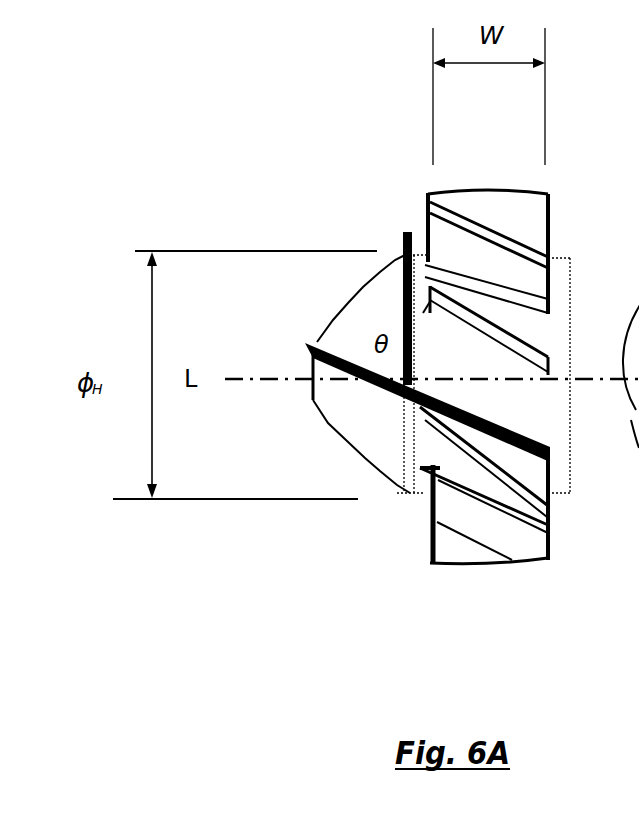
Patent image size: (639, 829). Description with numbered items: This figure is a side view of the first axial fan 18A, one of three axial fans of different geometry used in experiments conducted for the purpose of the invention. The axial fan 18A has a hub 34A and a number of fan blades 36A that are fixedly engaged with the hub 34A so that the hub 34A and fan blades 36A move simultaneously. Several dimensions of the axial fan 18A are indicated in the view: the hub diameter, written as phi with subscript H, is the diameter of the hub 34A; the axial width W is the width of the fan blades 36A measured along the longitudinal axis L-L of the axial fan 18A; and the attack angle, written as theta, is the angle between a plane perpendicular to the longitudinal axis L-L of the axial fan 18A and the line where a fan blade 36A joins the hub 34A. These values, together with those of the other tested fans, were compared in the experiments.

The first axial fan 18A is at (377, 304).
The hub 34A is at (395, 440).
The fan blades 36A is at (526, 217).